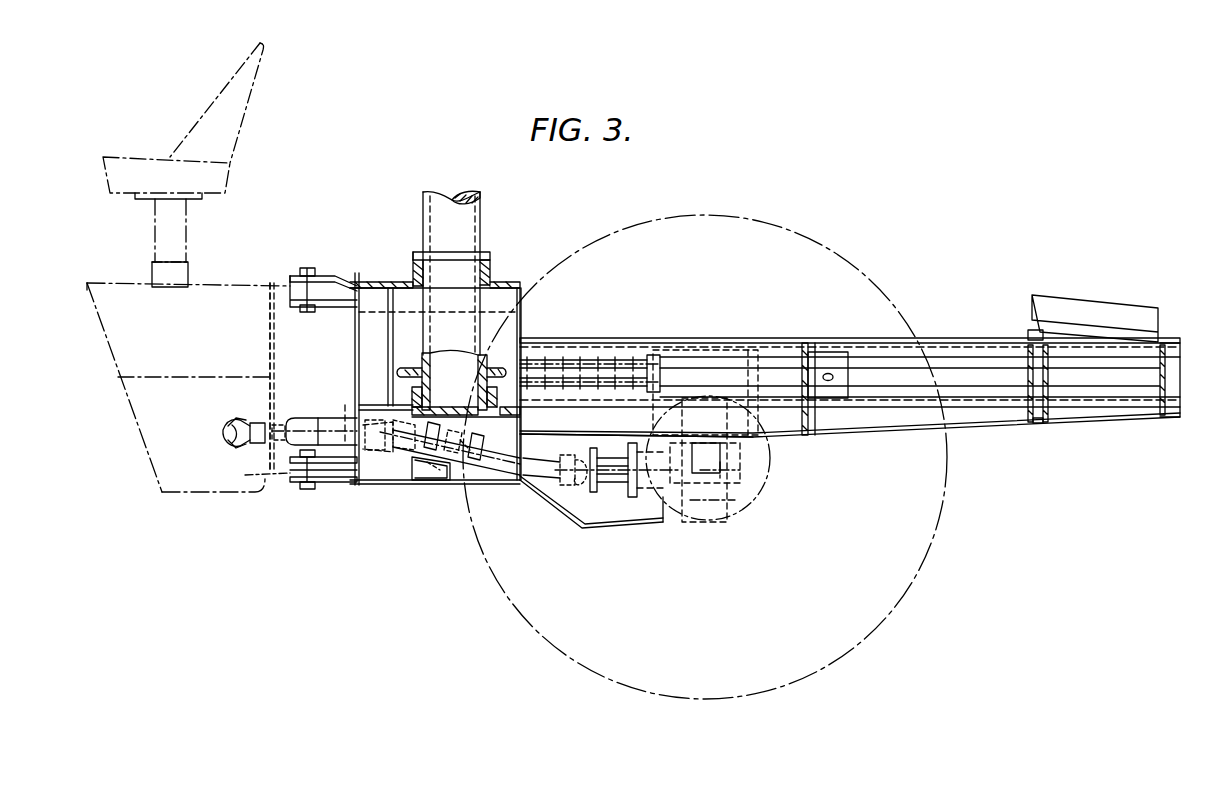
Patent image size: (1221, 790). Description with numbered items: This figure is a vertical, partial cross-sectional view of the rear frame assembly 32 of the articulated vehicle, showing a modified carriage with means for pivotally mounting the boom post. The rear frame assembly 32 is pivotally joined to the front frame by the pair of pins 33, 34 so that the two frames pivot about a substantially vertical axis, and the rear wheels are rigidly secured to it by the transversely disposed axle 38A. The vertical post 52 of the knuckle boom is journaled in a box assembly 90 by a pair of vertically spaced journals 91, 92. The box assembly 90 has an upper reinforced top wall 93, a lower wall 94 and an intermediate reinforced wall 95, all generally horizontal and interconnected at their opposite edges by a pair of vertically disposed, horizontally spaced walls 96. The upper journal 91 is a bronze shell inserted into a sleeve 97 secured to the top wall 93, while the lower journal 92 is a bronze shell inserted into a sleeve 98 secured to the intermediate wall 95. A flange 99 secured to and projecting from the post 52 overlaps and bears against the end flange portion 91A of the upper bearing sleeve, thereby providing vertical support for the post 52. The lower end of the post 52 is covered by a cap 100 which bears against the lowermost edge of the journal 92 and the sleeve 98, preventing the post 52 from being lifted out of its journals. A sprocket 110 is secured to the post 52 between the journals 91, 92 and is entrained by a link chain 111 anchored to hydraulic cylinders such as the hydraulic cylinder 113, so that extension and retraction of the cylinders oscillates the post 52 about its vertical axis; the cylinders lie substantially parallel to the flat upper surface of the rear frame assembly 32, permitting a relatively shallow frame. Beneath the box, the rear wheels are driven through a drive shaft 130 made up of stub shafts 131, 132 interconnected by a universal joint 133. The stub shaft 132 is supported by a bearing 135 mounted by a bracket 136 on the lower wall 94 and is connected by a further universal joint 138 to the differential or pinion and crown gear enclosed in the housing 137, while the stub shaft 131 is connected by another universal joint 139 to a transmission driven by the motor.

The rear frame assembly 32 is at (994, 430).
The pin 33 is at (306, 270).
The pin 34 is at (312, 420).
The axle 38A is at (770, 460).
The post 52 is at (472, 213).
The box assembly 90 is at (533, 305).
The journal 91 is at (415, 270).
The end flange portion 91A is at (417, 253).
The journal 92 is at (478, 416).
The top wall 93 is at (507, 283).
The lower wall 94 is at (440, 482).
The intermediate wall 95 is at (515, 404).
The vertically disposed walls 96 is at (356, 318).
The sleeve 97 is at (490, 270).
The sleeve 98 is at (498, 400).
The flange 99 is at (482, 257).
The cap 100 is at (466, 422).
The sprocket 110 is at (497, 327).
The link chain 111 is at (585, 362).
The hydraulic cylinder 113 is at (917, 360).
The drive shaft 130 is at (268, 418).
The stub shaft 131 is at (343, 407).
The stub shaft 132 is at (455, 462).
The universal joint 133 is at (395, 460).
The bearing 135 is at (430, 462).
The bracket 136 is at (420, 455).
The housing 137 is at (748, 505).
The universal joint 138 is at (578, 470).
The universal joint 139 is at (232, 446).